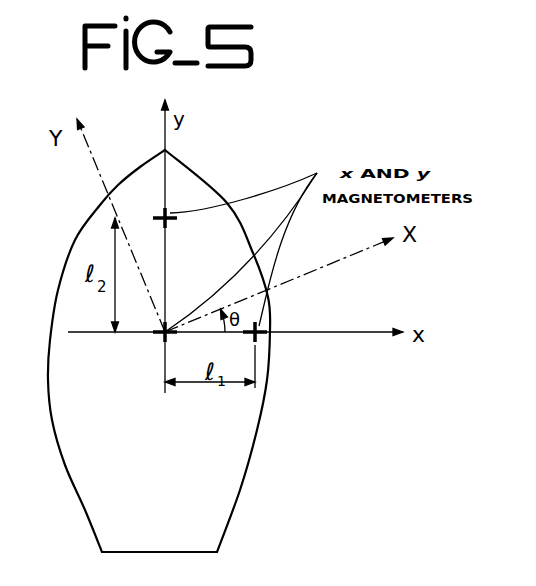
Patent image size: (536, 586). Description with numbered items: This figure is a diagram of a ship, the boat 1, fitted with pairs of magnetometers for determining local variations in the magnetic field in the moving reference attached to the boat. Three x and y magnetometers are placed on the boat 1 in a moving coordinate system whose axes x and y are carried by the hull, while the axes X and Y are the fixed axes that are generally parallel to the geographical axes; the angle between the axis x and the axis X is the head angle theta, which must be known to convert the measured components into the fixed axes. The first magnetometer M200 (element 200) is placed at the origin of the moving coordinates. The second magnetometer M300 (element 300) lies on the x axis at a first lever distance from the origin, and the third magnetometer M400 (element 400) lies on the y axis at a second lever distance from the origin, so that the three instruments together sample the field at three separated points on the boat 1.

The boat 1 is at (202, 195).
The first magnetometer M200 is at (141, 346).
The second magnetometer M300 is at (293, 323).
The third magnetometer M400 is at (193, 236).
The first magnetometer 200 is at (158, 336).
The second magnetometer 300 is at (262, 326).
The third magnetometer 400 is at (172, 220).